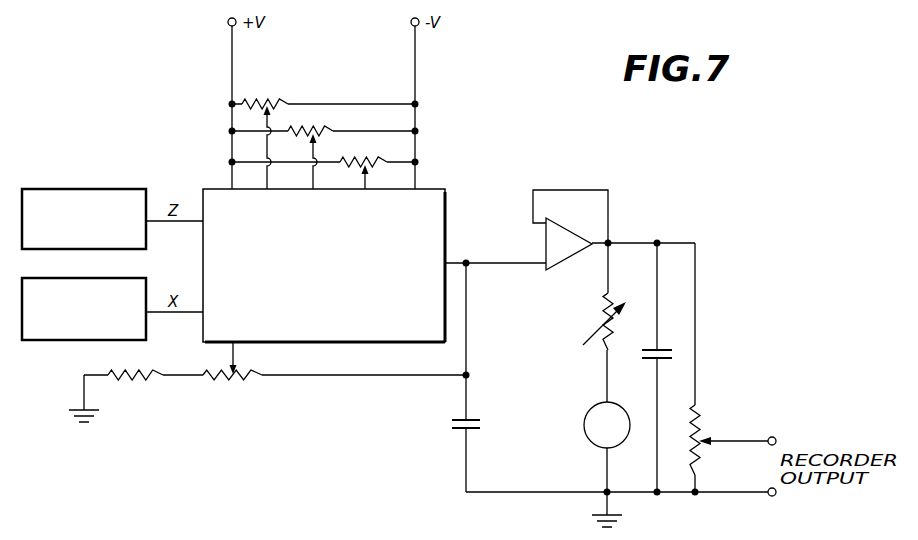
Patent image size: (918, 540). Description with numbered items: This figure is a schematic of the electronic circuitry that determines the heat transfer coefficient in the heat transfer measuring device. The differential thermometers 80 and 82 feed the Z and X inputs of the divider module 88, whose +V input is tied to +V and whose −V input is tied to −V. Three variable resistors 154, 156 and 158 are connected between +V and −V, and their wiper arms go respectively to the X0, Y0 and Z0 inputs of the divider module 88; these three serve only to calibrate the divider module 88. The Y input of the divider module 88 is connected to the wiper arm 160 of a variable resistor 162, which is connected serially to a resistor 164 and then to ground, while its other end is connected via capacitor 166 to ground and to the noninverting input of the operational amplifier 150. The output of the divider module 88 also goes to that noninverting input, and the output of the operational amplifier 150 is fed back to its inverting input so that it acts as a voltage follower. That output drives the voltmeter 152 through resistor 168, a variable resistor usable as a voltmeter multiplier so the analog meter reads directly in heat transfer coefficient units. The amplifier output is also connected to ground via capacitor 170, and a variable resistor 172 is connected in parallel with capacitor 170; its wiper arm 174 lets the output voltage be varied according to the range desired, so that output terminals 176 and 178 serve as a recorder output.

The differential thermometer 80 is at (122, 190).
The differential thermometer 82 is at (50, 340).
The divider module 88 is at (446, 194).
The operational amplifier 150 is at (588, 208).
The voltmeter 152 is at (594, 446).
The variable resistor 154 is at (268, 102).
The variable resistor 156 is at (318, 129).
The variable resistor 158 is at (386, 160).
The wiper arm 160 is at (234, 350).
The variable resistor 162 is at (240, 378).
The resistor 164 is at (140, 372).
The capacitor 166 is at (455, 432).
The resistor 168 is at (600, 310).
The capacitor 170 is at (665, 348).
The variable resistor 172 is at (697, 412).
The wiper arm 174 is at (735, 440).
The output terminal 176 is at (776, 438).
The output terminal 178 is at (776, 494).